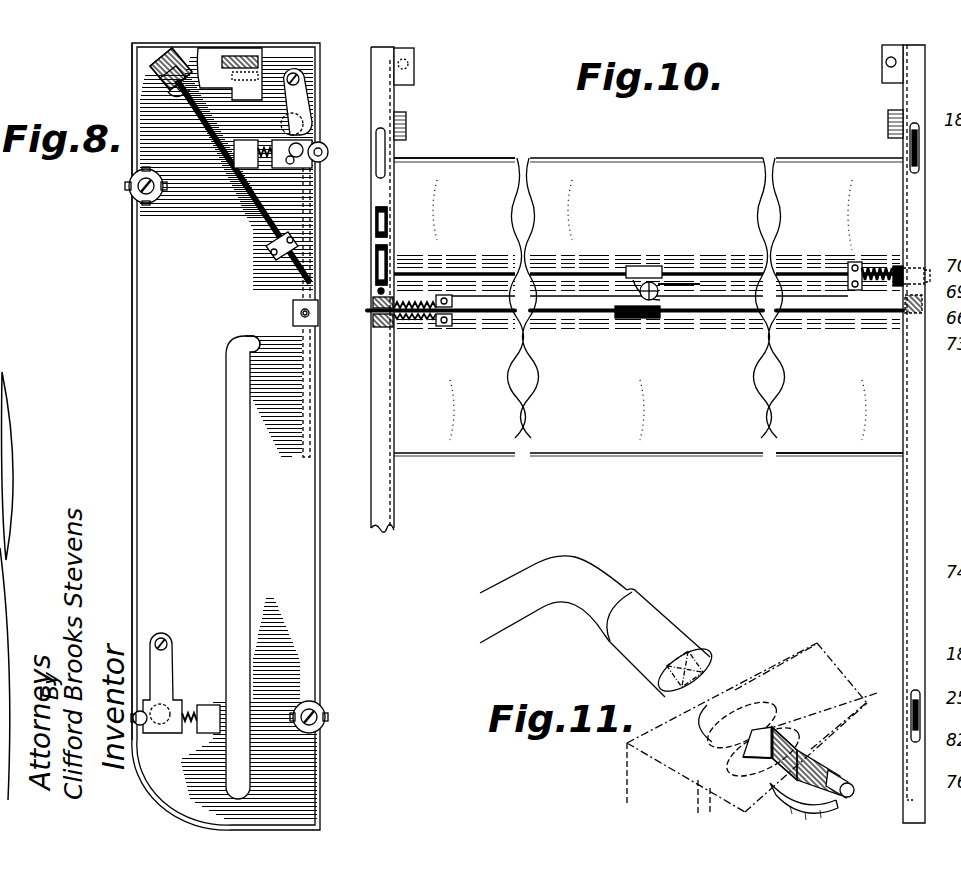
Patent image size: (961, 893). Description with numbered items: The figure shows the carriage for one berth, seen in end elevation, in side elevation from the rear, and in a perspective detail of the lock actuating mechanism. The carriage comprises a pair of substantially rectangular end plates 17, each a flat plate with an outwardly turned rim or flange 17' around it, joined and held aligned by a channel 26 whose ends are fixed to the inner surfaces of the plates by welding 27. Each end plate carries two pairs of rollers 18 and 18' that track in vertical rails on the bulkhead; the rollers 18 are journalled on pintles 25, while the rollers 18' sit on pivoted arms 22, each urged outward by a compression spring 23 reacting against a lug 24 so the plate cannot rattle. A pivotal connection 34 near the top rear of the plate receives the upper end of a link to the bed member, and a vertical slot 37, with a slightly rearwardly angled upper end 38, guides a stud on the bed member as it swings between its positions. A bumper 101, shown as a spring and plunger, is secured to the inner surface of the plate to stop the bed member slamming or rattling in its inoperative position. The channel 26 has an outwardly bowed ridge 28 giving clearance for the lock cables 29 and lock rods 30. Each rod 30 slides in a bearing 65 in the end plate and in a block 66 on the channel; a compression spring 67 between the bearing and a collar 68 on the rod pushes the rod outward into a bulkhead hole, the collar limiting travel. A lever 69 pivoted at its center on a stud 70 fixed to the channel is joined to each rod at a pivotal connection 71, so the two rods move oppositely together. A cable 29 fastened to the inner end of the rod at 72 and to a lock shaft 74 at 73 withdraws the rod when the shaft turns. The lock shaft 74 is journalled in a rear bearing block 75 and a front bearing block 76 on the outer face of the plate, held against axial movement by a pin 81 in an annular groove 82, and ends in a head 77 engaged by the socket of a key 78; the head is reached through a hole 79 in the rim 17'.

In FIG. 8, the end plate 17 is at (247, 436).
In FIG. 10, the end plate 17 is at (932, 434).
In FIG. 8, the rim or flange 17' is at (108, 391).
In FIG. 10, the rim or flange 17' is at (666, 289).
In FIG. 8, the rollers 18 is at (225, 450).
In FIG. 8, the rollers 18' is at (245, 454).
In FIG. 10, the rollers 18' is at (886, 148).
In FIG. 8, the pivoted arm 22 is at (306, 100).
In FIG. 8, the compression spring 23 is at (258, 160).
In FIG. 8, the lug 24 is at (282, 190).
In FIG. 8, the pintle 25 is at (150, 195).
In FIG. 10, the channel 26 is at (707, 158).
In FIG. 10, the welding 27 is at (398, 160).
In FIG. 8, the outwardly bowed ridge 28 is at (300, 288).
In FIG. 10, the outwardly bowed ridge 28 is at (478, 296).
In FIG. 10, the lock cable 29 is at (600, 270).
In FIG. 10, the lock rod 30 is at (728, 290).
In FIG. 10, the pivotal connection of link 34 is at (408, 118).
In FIG. 8, the vertical slot 37 is at (232, 462).
In FIG. 8, the angled upper end of slot 38 is at (246, 340).
In FIG. 8, the bearing 65 is at (292, 308).
In FIG. 10, the bearing 65 is at (372, 300).
In FIG. 10, the bearing block 66 is at (456, 326).
In FIG. 10, the compression spring 67 is at (420, 316).
In FIG. 10, the collar 68 is at (390, 320).
In FIG. 10, the lever 69 is at (662, 286).
In FIG. 10, the stud 70 is at (640, 291).
In FIG. 10, the pivotal connection of lock rod 71 is at (650, 268).
In FIG. 10, the cable attachment to rod 72 is at (640, 268).
In FIG. 8, the cable attachment to lock shaft 73 is at (372, 276).
In FIG. 10, the cable attachment to lock shaft 73 is at (372, 276).
In FIG. 8, the lock shaft 74 is at (246, 212).
In FIG. 10, the lock shaft 74 is at (372, 250).
In FIG. 11, the lock shaft 74 is at (834, 814).
In FIG. 8, the rear bearing block 75 is at (270, 252).
In FIG. 8, the front bearing block 76 is at (168, 84).
In FIG. 11, the front bearing block 76 is at (870, 700).
In FIG. 11, the head 77 is at (790, 728).
In FIG. 11, the key 78 is at (728, 676).
In FIG. 8, the hole 79 is at (152, 56).
In FIG. 11, the hole 79 is at (790, 648).
In FIG. 8, the pin 81 is at (178, 94).
In FIG. 11, the pin 81 is at (850, 787).
In FIG. 8, the annular groove 82 is at (172, 96).
In FIG. 11, the annular groove 82 is at (792, 812).
In FIG. 8, the bumper 101 is at (266, 54).
In FIG. 10, the bumper 101 is at (418, 74).